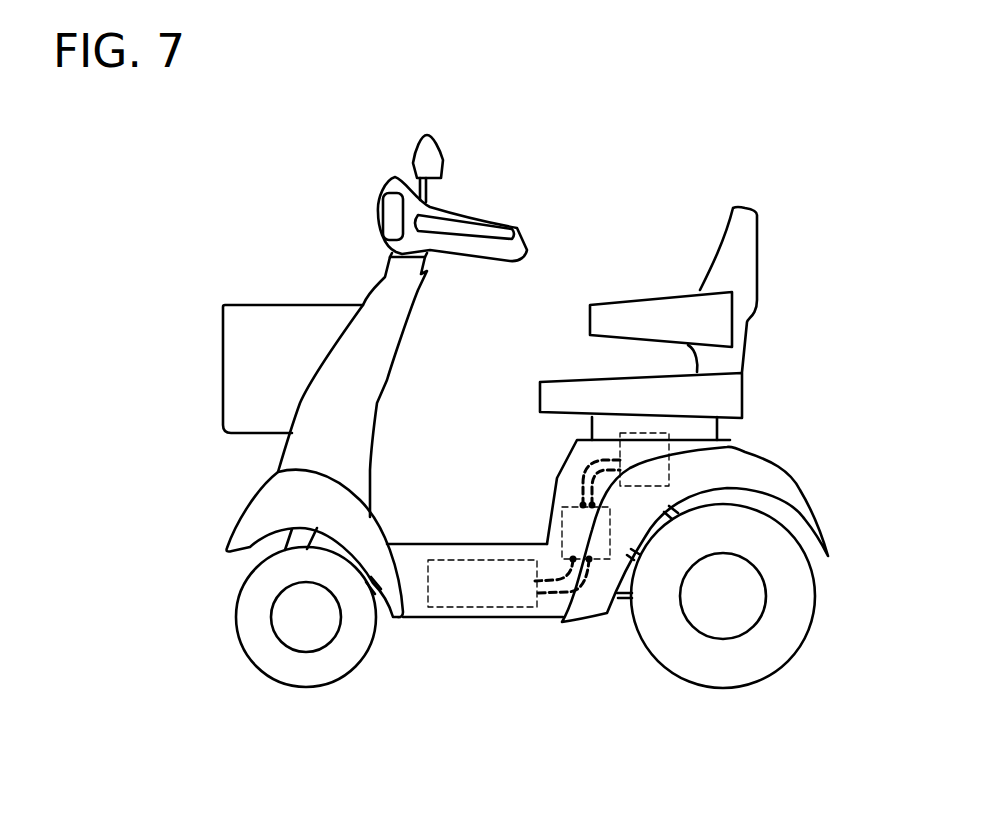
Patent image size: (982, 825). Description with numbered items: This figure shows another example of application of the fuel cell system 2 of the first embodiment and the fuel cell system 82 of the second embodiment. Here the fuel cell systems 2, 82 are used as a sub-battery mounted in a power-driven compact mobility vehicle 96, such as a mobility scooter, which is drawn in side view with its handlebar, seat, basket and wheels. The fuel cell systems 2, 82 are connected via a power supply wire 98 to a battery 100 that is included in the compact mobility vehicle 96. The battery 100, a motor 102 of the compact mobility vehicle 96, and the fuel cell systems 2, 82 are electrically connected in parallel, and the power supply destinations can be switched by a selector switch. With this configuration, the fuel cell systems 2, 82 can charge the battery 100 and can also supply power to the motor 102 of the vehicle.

The compact mobility vehicle 96 is at (473, 212).
The power supply wire 98 is at (587, 468).
The battery 100 is at (602, 550).
The motor 102 is at (477, 598).
The fuel cell system 2 is at (737, 441).
The fuel cell system 82 is at (660, 453).